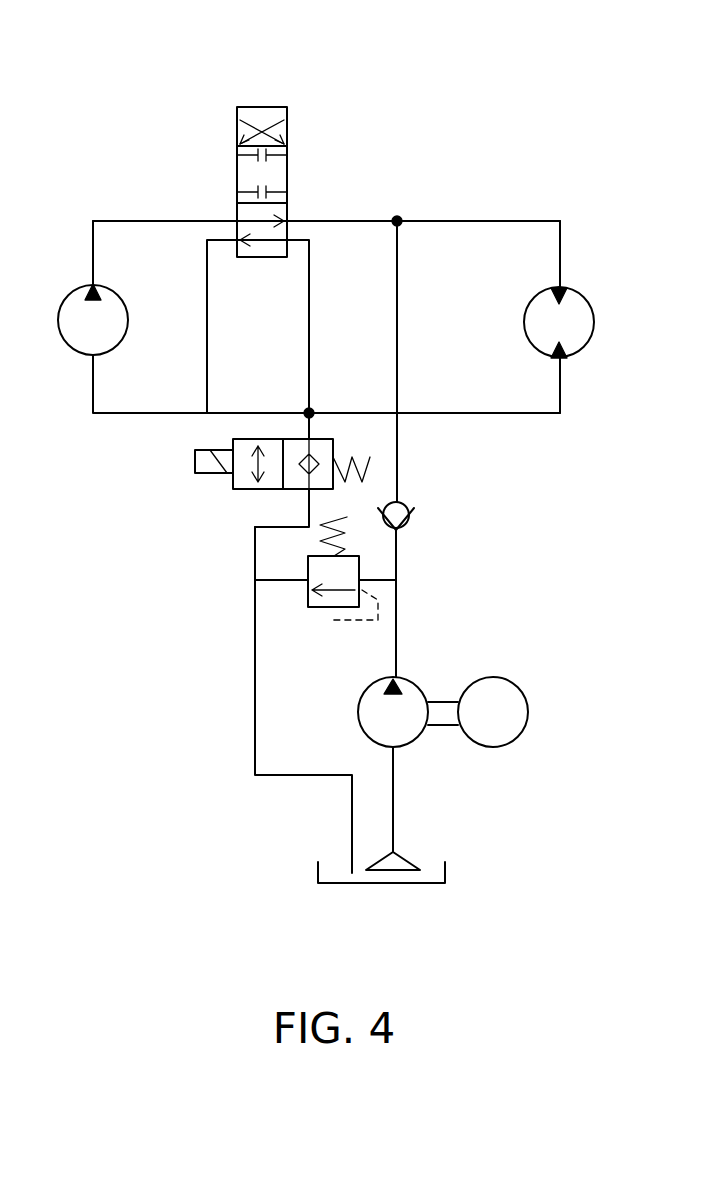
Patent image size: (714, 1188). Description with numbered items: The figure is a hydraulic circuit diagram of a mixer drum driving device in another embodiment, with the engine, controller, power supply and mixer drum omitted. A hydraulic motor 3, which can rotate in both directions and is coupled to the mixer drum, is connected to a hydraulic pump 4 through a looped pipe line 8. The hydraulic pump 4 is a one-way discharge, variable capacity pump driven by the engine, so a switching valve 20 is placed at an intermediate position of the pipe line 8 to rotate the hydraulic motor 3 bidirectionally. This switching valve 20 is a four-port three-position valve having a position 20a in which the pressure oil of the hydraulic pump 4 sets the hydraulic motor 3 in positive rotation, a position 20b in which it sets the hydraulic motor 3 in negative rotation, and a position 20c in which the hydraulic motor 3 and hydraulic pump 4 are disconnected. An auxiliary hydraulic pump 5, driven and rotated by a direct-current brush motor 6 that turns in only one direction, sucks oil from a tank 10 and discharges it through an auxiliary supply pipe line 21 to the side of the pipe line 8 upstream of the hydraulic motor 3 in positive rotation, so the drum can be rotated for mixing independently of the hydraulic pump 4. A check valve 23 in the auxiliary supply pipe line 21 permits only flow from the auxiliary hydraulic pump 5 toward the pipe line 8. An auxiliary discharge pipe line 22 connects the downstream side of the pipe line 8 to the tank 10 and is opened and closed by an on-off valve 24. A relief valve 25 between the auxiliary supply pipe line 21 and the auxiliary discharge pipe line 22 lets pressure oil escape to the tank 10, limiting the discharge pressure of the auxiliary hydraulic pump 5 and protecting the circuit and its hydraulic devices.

The switching valve 20 is at (267, 172).
The position 20a is at (244, 257).
The position 20b is at (288, 110).
The position 20c is at (237, 163).
The hydraulic pump 4 is at (68, 348).
The hydraulic motor 3 is at (533, 300).
The pipe line 8 is at (463, 220).
The auxiliary supply pipe line 21 is at (397, 455).
The check valve 23 is at (408, 522).
The on-off valve 24 is at (233, 487).
The relief valve 25 is at (318, 606).
The auxiliary discharge pipe line 22 is at (253, 687).
The auxiliary hydraulic pump 5 is at (402, 747).
The direct-current brush motor 6 is at (502, 678).
The tank 10 is at (318, 862).